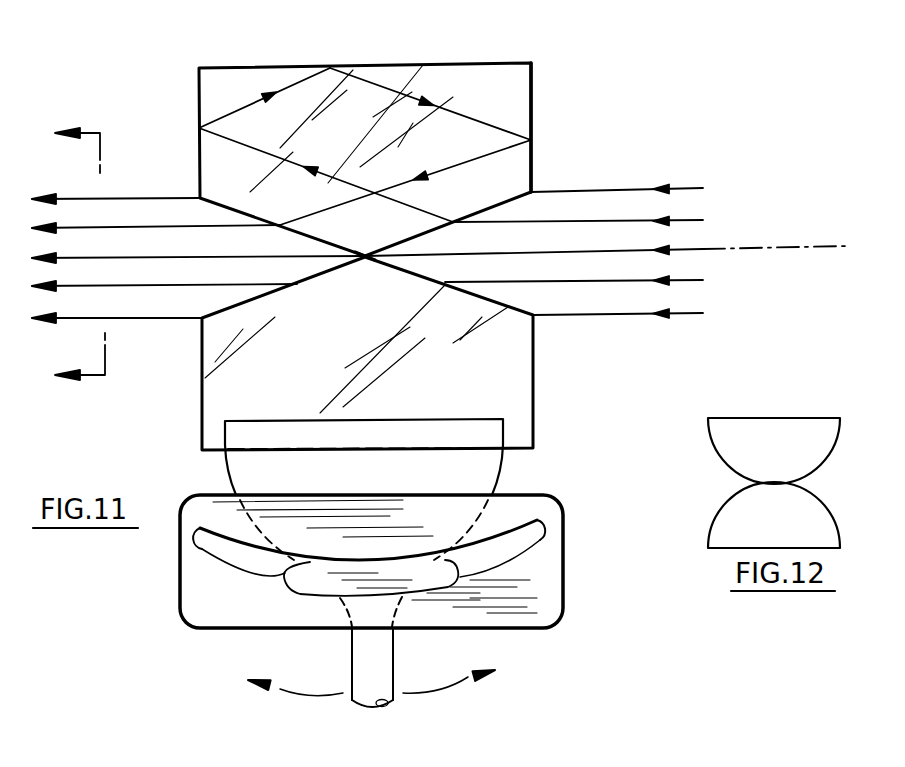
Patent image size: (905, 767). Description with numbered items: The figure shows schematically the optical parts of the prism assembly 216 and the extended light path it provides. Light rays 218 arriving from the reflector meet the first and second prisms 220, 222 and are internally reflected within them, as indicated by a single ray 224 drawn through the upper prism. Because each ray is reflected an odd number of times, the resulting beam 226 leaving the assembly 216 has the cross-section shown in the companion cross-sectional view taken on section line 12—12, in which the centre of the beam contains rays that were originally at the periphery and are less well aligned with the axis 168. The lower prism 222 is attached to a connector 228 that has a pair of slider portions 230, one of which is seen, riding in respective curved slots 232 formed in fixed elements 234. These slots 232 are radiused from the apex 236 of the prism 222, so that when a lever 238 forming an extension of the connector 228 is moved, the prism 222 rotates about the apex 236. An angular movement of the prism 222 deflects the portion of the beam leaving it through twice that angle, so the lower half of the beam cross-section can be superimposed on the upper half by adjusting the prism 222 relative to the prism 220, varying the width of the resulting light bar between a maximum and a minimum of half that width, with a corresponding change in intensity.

The section line 12 is at (80, 257).
The axis 168 is at (747, 243).
The prism assembly 216 is at (545, 109).
The light rays 218 is at (680, 187).
The first prism 220 is at (473, 77).
The second prism 222 is at (510, 387).
The single ray 224 is at (292, 86).
The resulting beam 226 is at (75, 323).
The connector 228 is at (495, 473).
The slider portions 230 is at (307, 580).
The curved slots 232 is at (523, 540).
The fixed elements 234 is at (517, 600).
The apex 236 is at (363, 260).
The lever 238 is at (378, 678).